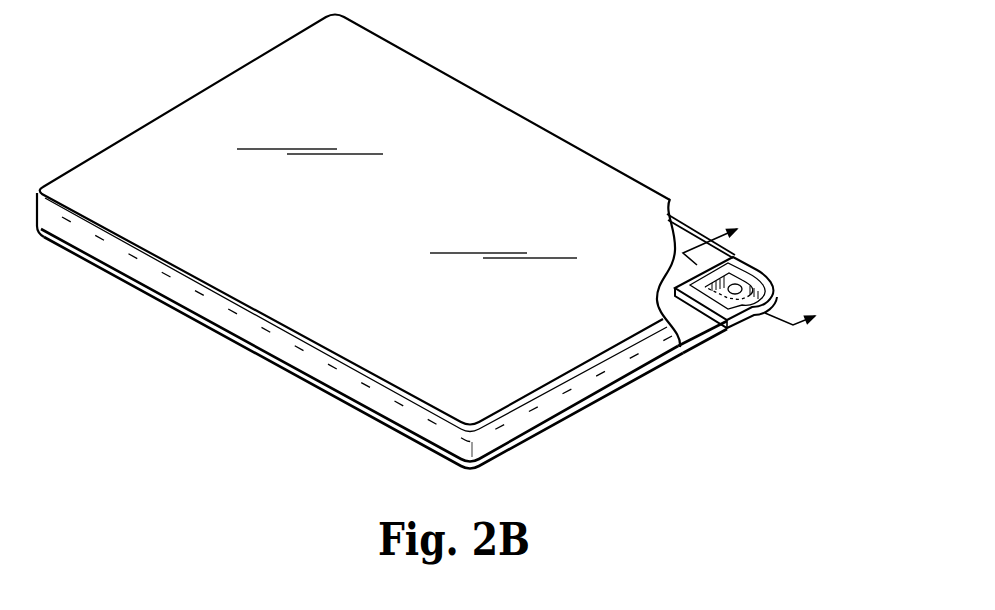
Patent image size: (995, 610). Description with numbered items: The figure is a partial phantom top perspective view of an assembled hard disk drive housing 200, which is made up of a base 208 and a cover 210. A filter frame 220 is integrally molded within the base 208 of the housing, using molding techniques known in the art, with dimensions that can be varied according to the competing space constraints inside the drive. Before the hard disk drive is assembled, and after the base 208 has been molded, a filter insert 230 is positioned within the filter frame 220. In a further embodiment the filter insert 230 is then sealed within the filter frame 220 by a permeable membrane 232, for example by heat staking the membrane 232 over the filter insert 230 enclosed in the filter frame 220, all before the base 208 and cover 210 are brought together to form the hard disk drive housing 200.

The hard disk drive housing 200 is at (450, 242).
The base 208 is at (284, 367).
The cover 210 is at (608, 163).
The filter frame 220 is at (743, 268).
The filter insert 230 is at (768, 281).
The permeable membrane 232 is at (735, 289).